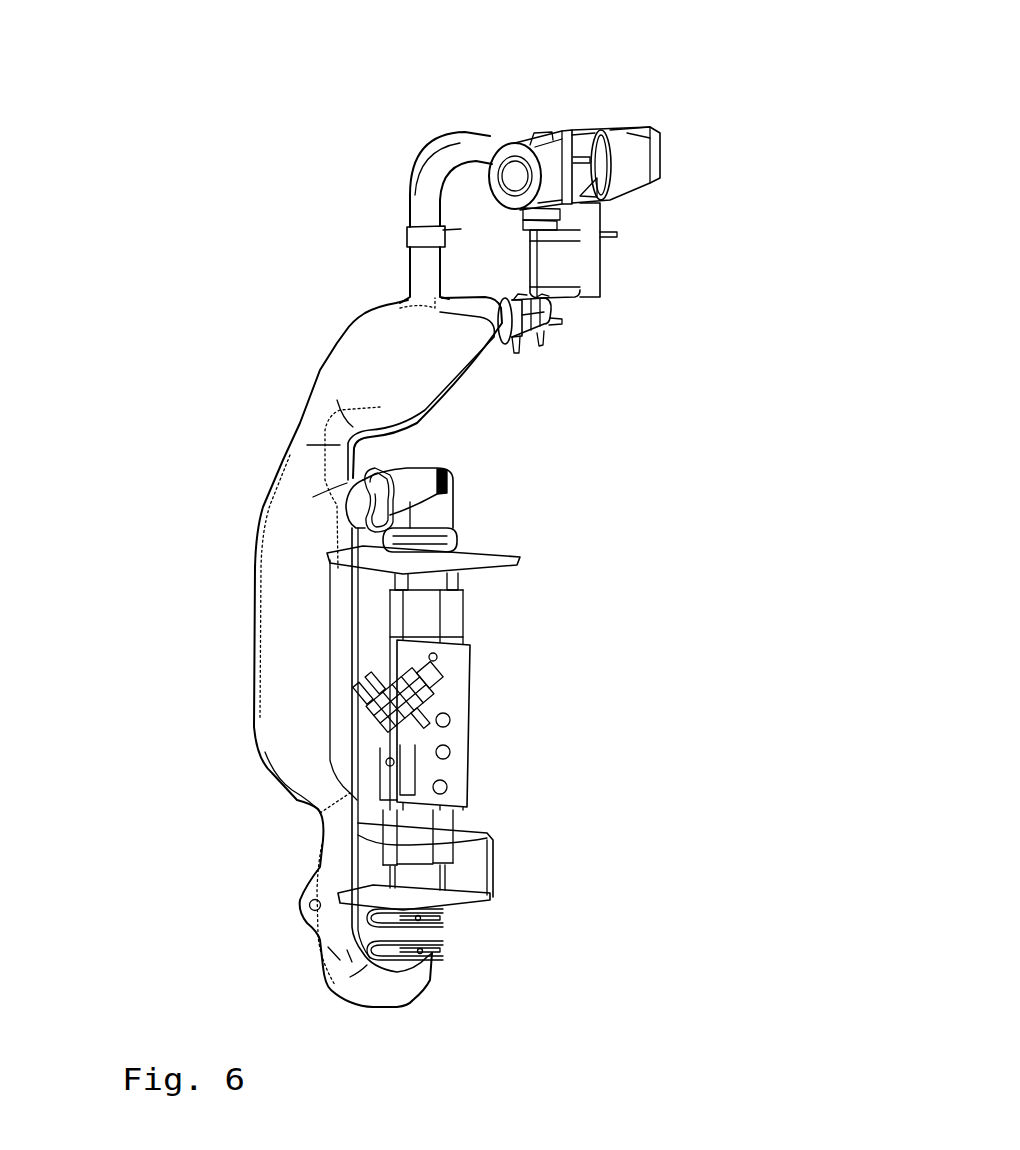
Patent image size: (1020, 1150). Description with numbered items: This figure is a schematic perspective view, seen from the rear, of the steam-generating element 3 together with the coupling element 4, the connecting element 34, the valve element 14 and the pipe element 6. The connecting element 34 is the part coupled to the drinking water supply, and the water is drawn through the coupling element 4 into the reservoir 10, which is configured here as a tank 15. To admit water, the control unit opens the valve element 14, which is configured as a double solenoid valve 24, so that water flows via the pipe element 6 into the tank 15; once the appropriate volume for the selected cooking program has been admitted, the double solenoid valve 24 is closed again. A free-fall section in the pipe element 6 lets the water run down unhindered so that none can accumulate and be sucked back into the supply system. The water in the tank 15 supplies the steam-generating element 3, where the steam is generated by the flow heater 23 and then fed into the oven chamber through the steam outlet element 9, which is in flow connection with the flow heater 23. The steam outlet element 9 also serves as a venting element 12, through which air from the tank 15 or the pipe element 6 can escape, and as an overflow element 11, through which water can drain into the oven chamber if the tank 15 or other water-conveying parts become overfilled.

The steam-generating element 3 is at (268, 652).
The coupling element 4 is at (399, 165).
The pipe element 6 is at (423, 283).
The steam outlet element 9 is at (533, 308).
The reservoir 10 is at (268, 652).
The overflow element 11 is at (713, 349).
The venting element 12 is at (563, 323).
The valve element 14 is at (722, 250).
The tank 15 is at (308, 608).
The flow heater 23 is at (427, 622).
The double solenoid valve 24 is at (577, 215).
The connecting element 34 is at (515, 182).